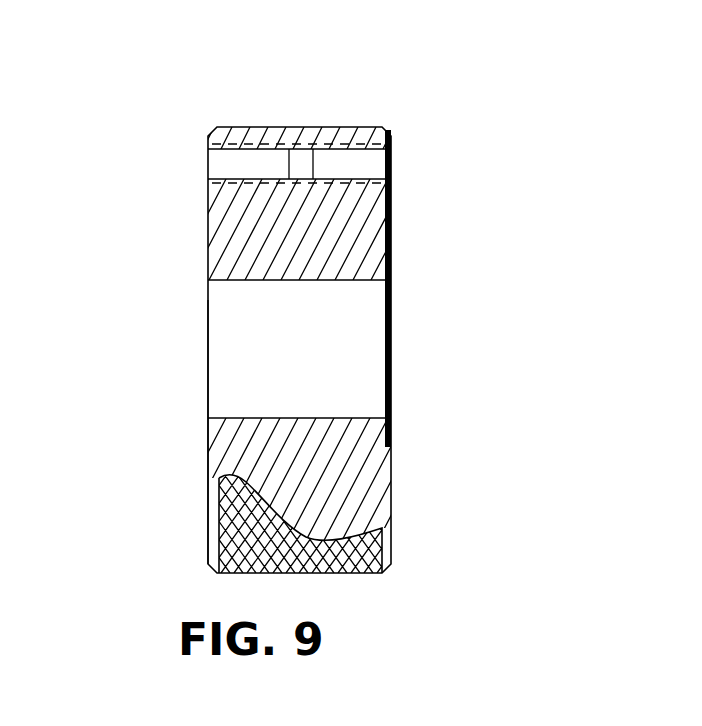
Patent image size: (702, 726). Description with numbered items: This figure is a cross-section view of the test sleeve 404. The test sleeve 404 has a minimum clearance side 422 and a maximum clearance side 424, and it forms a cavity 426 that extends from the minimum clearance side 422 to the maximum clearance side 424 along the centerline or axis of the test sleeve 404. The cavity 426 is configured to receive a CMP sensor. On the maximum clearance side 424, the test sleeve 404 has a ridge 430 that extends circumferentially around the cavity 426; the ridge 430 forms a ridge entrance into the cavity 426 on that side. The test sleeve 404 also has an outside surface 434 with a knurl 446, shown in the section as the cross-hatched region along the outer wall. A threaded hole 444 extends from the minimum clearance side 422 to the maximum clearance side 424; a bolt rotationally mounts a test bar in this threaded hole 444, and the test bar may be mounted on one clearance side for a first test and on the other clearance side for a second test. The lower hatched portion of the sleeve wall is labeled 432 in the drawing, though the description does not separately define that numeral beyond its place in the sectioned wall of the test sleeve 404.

The test sleeve 404 is at (105, 50).
The minimum clearance side 422 is at (208, 464).
The maximum clearance side 424 is at (393, 200).
The cavity 426 is at (368, 310).
The ridge 430 is at (393, 233).
The lower end portion 432 is at (392, 421).
The outside surface 434 is at (267, 127).
The threaded hole 444 is at (343, 163).
The knurl 446 is at (360, 557).